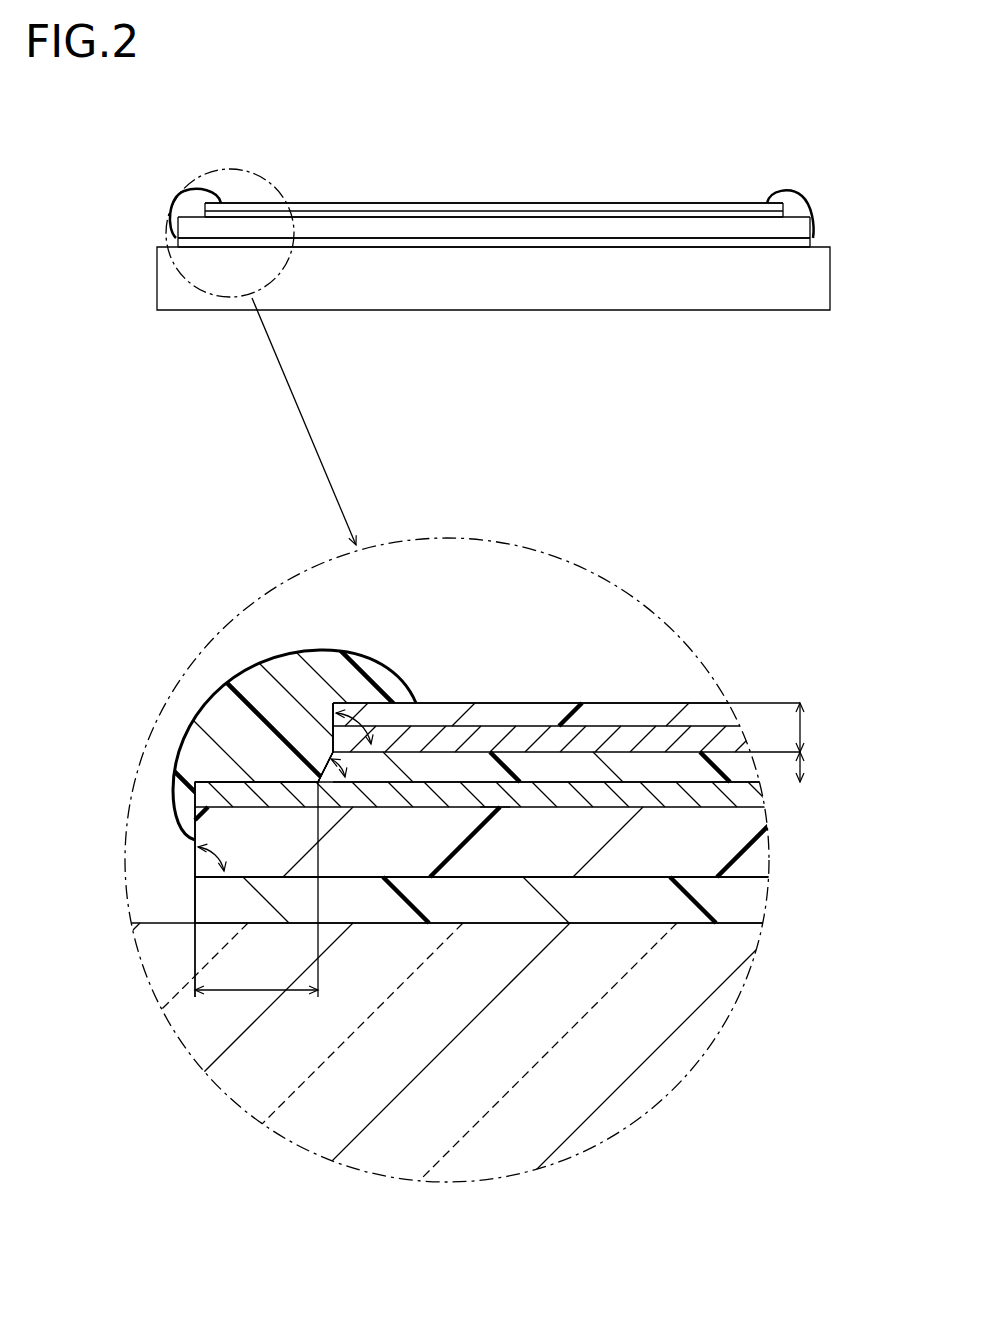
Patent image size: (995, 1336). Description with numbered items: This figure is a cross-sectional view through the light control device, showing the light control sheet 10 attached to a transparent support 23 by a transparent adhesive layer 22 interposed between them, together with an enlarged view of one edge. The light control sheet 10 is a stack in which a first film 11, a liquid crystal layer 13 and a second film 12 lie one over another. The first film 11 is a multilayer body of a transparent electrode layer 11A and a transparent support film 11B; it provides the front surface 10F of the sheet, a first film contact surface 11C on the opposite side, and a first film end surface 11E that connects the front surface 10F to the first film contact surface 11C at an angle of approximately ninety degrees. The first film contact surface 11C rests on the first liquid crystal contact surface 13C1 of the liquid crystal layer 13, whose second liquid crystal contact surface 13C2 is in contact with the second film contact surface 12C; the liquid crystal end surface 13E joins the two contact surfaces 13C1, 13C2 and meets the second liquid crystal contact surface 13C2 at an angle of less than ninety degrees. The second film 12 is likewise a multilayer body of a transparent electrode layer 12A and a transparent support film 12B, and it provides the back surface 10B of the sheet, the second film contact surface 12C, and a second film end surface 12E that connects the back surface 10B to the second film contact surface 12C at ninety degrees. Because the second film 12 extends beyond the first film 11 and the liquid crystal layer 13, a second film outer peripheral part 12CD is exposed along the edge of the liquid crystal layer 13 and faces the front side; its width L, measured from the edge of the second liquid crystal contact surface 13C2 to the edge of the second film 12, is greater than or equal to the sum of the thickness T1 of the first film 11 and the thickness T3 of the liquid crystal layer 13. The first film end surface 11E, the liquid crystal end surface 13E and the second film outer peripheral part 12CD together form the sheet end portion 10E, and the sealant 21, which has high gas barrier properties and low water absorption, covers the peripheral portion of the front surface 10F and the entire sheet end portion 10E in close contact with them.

The light control sheet 10 is at (522, 539).
The front surface 10F is at (408, 202).
The back surface 10B is at (463, 878).
The sheet end portion 10E is at (110, 605).
The first film 11 is at (511, 455).
The transparent electrode layer 11A is at (632, 732).
The transparent support film 11B is at (690, 711).
The first film contact surface 11C is at (437, 768).
The first film end surface 11E is at (333, 740).
The second film 12 is at (522, 580).
The transparent electrode layer 12A is at (747, 796).
The transparent support film 12B is at (752, 853).
The second film contact surface 12C is at (428, 779).
The second film outer peripheral part 12CD is at (227, 780).
The second film end surface 12E is at (194, 862).
The liquid crystal layer 13 is at (679, 214).
The first liquid crystal contact surface 13C1 is at (468, 767).
The second liquid crystal contact surface 13C2 is at (495, 808).
The liquid crystal end surface 13E is at (331, 757).
The sealant 21 is at (192, 207).
The transparent adhesive layer 22 is at (811, 243).
The transparent support 23 is at (596, 311).
The thickness T1 is at (819, 727).
The thickness T3 is at (819, 767).
The width L is at (256, 889).